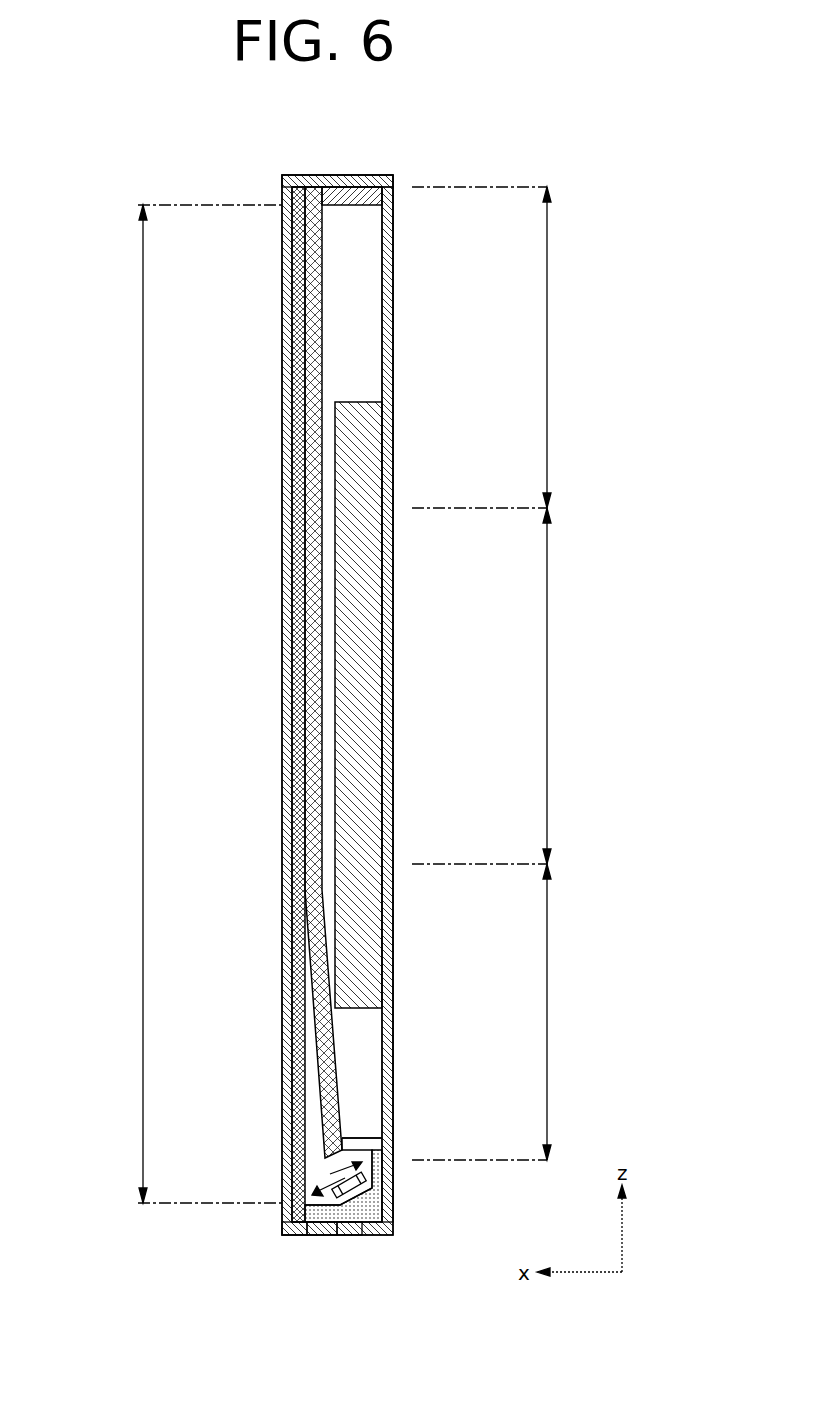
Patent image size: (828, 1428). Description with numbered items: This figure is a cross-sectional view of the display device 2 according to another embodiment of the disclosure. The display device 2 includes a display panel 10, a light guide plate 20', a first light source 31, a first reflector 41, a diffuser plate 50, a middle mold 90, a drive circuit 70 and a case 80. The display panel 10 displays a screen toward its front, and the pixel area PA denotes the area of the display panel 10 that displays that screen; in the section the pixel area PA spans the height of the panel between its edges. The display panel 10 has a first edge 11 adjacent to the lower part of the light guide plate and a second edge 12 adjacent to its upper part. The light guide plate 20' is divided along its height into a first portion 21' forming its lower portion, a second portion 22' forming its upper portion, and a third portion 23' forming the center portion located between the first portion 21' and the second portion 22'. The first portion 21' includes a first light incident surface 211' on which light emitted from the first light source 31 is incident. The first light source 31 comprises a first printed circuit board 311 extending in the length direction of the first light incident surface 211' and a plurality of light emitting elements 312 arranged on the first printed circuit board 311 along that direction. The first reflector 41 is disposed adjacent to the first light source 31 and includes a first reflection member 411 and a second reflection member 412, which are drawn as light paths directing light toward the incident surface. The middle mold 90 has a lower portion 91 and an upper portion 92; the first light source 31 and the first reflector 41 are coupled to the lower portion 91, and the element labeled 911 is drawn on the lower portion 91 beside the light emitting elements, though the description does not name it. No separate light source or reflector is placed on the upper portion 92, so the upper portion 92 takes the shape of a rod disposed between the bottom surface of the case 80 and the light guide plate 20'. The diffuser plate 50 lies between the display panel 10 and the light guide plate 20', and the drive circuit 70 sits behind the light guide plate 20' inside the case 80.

The display device 2 is at (340, 107).
The display panel 10 is at (291, 392).
The first edge 11 is at (290, 1228).
The second edge 12 is at (285, 200).
The light guide plate 20' is at (278, 672).
The first portion 21' is at (502, 1012).
The second portion 22' is at (502, 347).
The third portion 23' is at (502, 686).
The first light source 31 is at (348, 1291).
The first printed circuit board 311 is at (345, 1232).
The light emitting elements 312 is at (320, 1230).
The first reflector 41 is at (203, 1155).
The first reflection member 411 is at (300, 1191).
The second reflection member 412 is at (330, 1174).
The diffuser plate 50 is at (297, 478).
The drive circuit 70 is at (362, 625).
The case 80 is at (395, 192).
The middle mold 90 is at (367, 1232).
The lower portion 91 is at (380, 1210).
The light source 911 is at (365, 1177).
The upper portion 92 is at (342, 196).
The first light incident surface 211' is at (402, 1112).
The pixel area PA is at (198, 704).